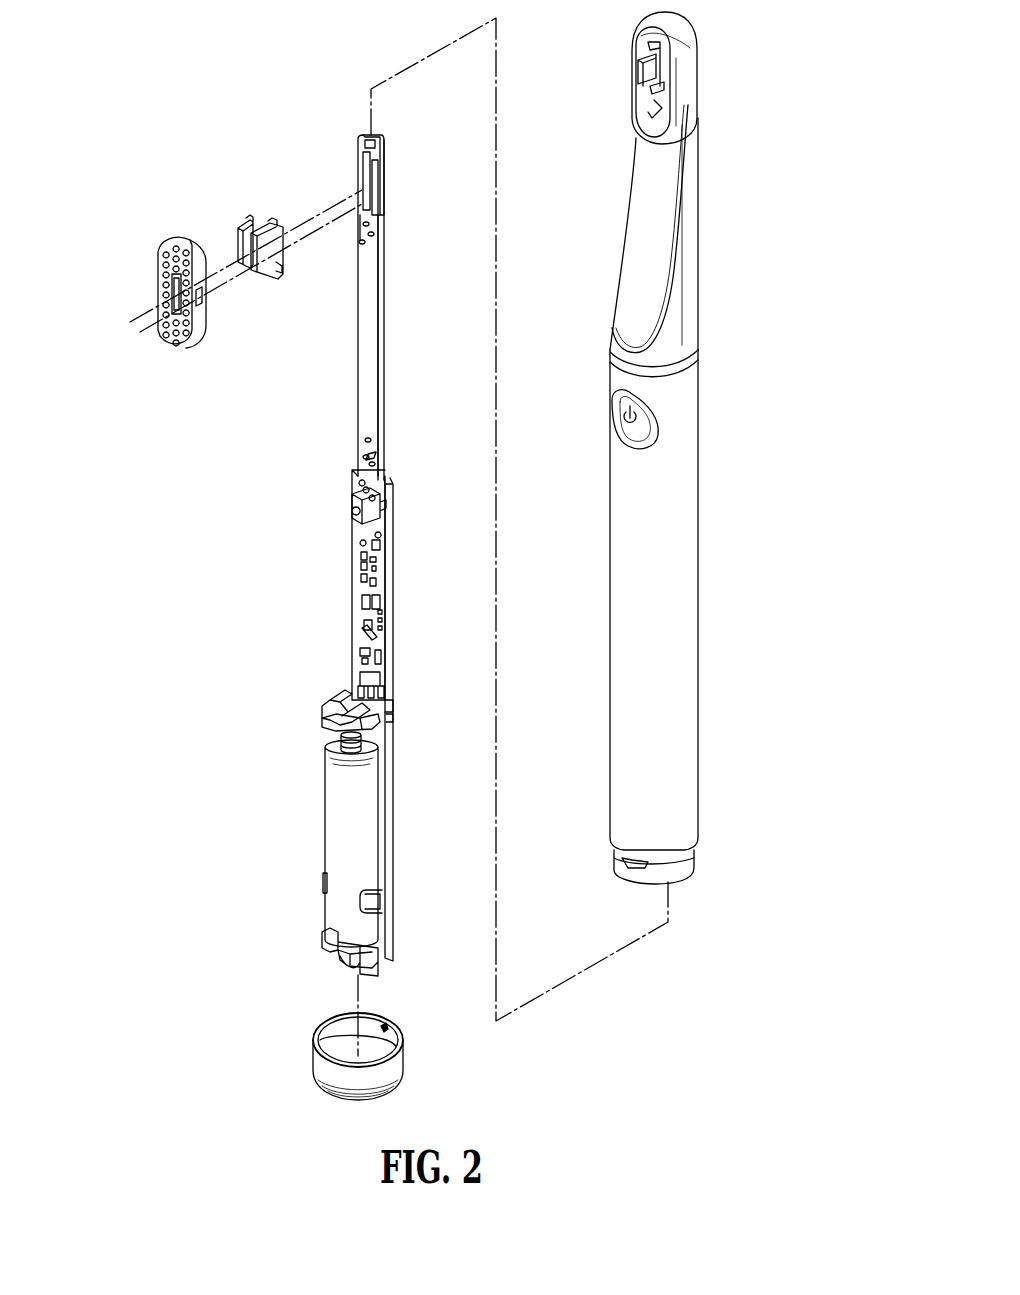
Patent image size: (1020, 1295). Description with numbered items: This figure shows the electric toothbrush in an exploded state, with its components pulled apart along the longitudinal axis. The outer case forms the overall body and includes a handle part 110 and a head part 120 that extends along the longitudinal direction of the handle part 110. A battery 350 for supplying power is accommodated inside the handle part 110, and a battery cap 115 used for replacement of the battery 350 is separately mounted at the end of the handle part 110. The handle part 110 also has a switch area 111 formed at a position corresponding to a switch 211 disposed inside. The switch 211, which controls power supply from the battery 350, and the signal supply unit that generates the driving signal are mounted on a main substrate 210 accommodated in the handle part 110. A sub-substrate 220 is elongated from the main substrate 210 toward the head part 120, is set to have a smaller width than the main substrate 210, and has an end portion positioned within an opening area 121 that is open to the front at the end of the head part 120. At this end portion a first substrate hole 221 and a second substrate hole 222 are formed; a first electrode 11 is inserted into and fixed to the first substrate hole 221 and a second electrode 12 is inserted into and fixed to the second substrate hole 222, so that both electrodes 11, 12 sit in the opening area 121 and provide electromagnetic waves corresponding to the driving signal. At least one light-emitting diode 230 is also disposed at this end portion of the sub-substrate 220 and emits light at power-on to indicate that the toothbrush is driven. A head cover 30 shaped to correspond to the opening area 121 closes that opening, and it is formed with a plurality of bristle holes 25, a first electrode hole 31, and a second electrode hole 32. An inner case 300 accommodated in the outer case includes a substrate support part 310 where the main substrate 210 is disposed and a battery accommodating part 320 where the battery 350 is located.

The first electrode 11 is at (272, 262).
The second electrode 12 is at (246, 222).
The bristle holes 25 is at (160, 262).
The head cover 30 is at (183, 238).
The first electrode hole 31 is at (162, 332).
The second electrode hole 32 is at (165, 278).
The handle part 110 is at (680, 598).
The switch area 111 is at (616, 420).
The battery cap 115 is at (328, 1072).
The head part 120 is at (680, 74).
The opening area 121 is at (645, 52).
The main substrate 210 is at (357, 588).
The switch 211 is at (343, 513).
The sub-substrate 220 is at (362, 377).
The first substrate hole 221 is at (360, 200).
The second substrate hole 222 is at (365, 178).
The light-emitting diode 230 is at (374, 218).
The inner case 300 is at (397, 755).
The substrate support part 310 is at (392, 622).
The battery accommodating part 320 is at (388, 914).
The battery 350 is at (338, 836).